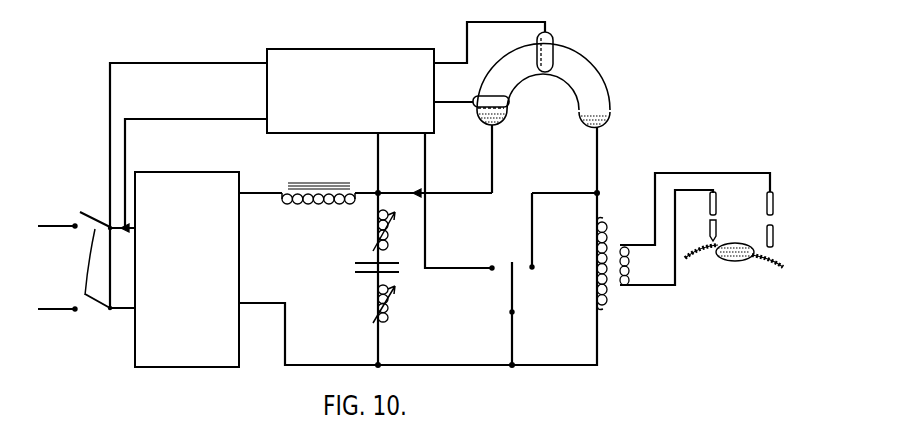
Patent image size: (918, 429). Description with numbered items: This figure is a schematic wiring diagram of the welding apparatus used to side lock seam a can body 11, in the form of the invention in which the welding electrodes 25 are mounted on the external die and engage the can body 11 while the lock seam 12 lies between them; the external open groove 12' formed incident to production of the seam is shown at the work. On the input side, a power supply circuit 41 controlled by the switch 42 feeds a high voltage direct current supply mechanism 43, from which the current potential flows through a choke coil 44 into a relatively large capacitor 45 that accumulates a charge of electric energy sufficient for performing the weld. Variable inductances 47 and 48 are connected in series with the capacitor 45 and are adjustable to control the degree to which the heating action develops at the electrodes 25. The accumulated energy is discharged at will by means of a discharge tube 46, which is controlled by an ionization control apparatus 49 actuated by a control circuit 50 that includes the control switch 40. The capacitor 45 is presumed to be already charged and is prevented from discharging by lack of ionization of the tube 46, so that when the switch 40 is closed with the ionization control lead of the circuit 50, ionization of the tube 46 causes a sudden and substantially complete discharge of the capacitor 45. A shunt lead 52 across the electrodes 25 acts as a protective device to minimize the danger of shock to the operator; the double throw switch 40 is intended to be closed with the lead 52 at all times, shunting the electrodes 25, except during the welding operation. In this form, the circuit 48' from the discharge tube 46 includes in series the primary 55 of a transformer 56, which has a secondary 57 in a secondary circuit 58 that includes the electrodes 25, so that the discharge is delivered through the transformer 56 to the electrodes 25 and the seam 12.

The can body 11 is at (763, 267).
The lock seam 12 is at (736, 241).
The external open groove 12' is at (784, 250).
The electrodes 25 is at (773, 237).
The control switch 40 is at (515, 290).
The power supply circuit 41 is at (50, 308).
The switch 42 is at (92, 298).
The high voltage direct current supply mechanism 43 is at (192, 360).
The choke coil 44 is at (333, 207).
The capacitor 45 is at (357, 266).
The discharge tube 46 is at (601, 68).
The variable inductance 47 is at (376, 226).
The variable inductance 48 is at (370, 307).
The circuit 48' is at (537, 261).
The ionization control apparatus 49 is at (378, 49).
The control circuit 50 is at (427, 228).
The shunt lead 52 is at (535, 237).
The primary 55 is at (608, 302).
The transformer 56 is at (618, 241).
The secondary 57 is at (630, 270).
The secondary circuit 58 is at (683, 172).